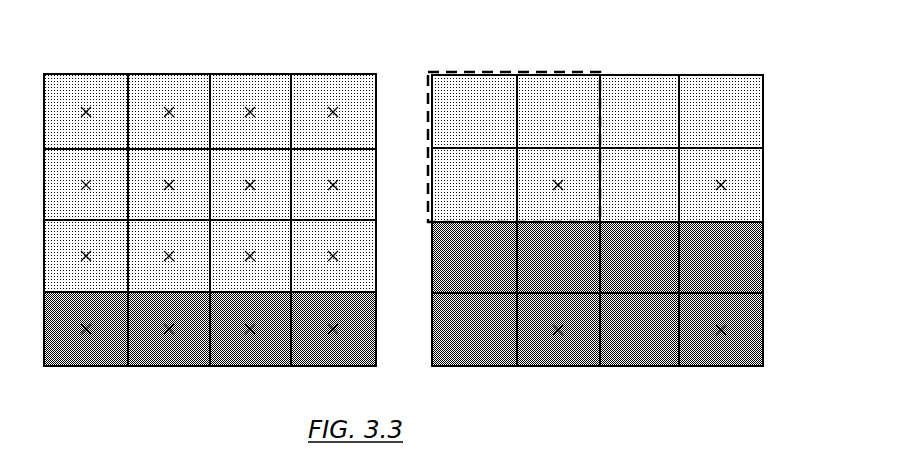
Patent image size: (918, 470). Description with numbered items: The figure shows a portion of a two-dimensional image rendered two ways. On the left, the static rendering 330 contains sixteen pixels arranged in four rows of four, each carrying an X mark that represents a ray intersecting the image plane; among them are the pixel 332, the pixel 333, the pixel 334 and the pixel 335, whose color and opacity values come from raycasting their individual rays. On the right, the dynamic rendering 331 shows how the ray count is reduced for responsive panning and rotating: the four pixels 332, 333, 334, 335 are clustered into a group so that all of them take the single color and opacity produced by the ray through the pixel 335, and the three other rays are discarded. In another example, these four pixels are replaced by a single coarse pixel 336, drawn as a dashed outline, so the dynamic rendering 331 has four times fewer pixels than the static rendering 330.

The static rendering 330 is at (189, 70).
The dynamic rendering 331 is at (624, 69).
The pixel 332 is at (106, 141).
The pixel 333 is at (186, 141).
The pixel 334 is at (106, 213).
The pixel 335 is at (186, 213).
The coarse pixel 336 is at (492, 69).